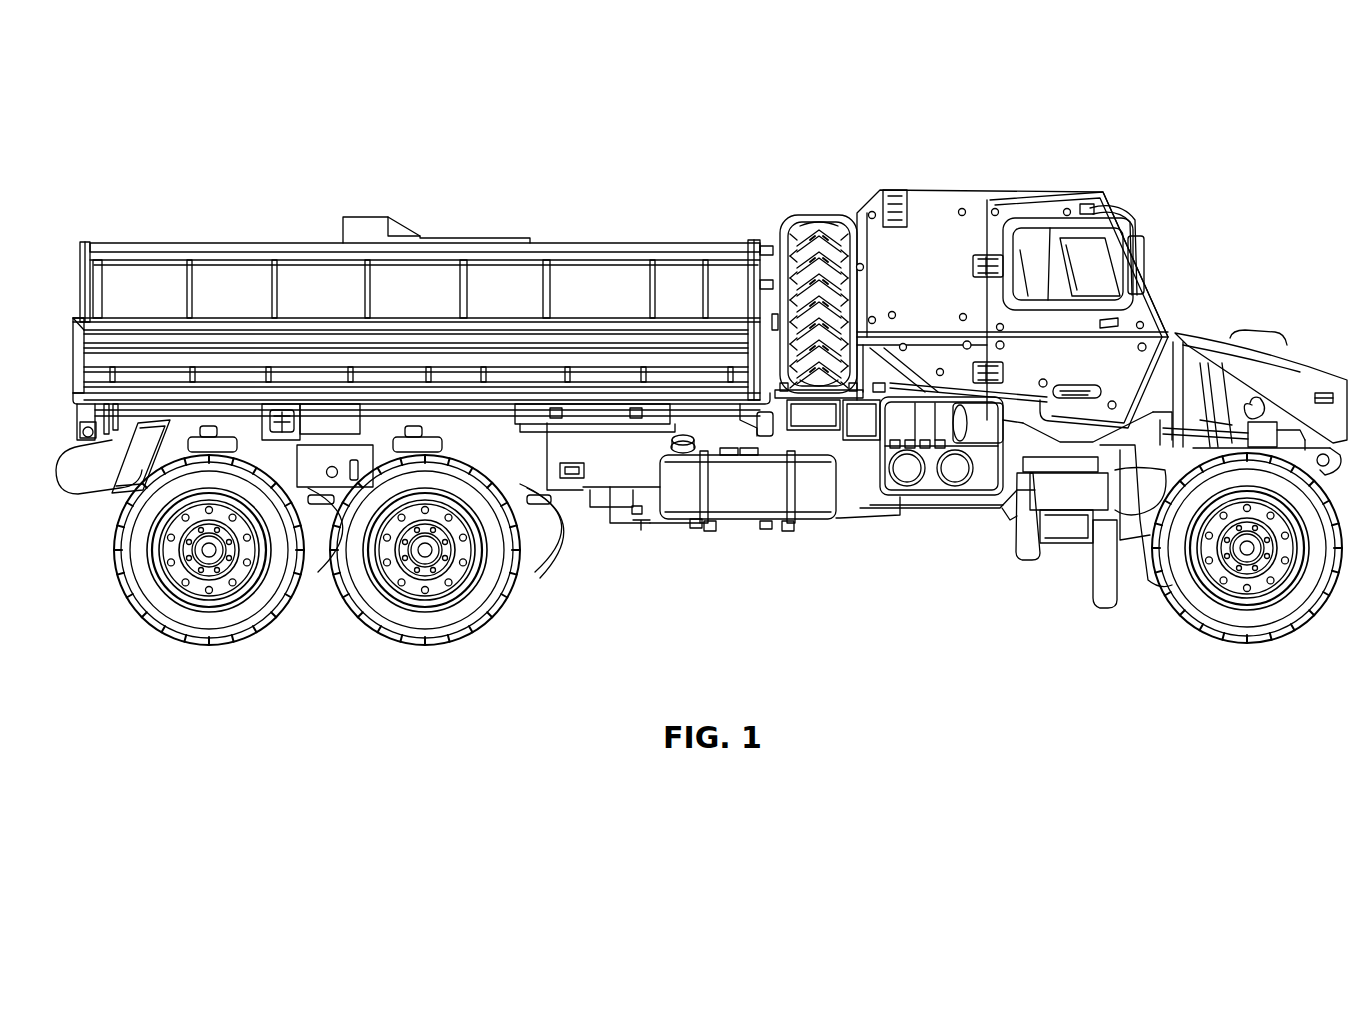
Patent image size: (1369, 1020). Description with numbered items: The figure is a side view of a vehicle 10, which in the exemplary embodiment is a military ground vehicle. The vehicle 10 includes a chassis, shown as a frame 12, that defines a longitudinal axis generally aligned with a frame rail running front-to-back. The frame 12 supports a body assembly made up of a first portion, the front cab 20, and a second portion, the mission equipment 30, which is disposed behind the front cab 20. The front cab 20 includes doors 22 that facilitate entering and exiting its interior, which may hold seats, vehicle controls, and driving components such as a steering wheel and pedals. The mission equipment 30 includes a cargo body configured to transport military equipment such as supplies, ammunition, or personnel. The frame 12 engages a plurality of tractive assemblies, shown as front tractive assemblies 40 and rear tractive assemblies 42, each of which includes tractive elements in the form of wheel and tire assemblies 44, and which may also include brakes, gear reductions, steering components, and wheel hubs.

The vehicle 10 is at (144, 148).
The frame 12 is at (594, 468).
The front cab 20 is at (1000, 170).
The doors 22 is at (1110, 346).
The mission equipment 30 is at (508, 213).
The front tractive assemblies 40 is at (1243, 655).
The rear tractive assemblies 42 is at (212, 648).
The wheel and tire assemblies 44 is at (176, 615).